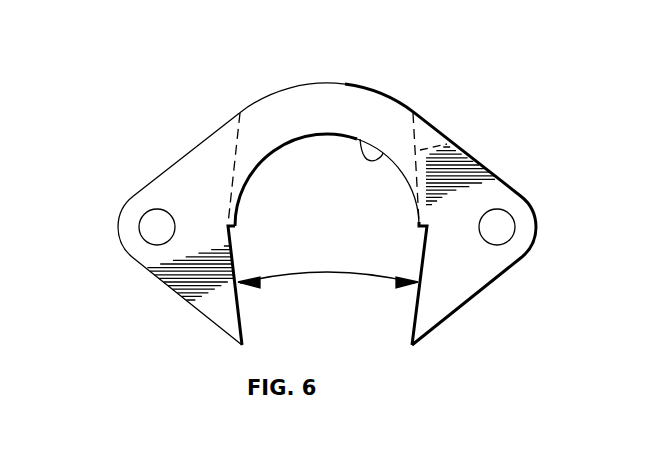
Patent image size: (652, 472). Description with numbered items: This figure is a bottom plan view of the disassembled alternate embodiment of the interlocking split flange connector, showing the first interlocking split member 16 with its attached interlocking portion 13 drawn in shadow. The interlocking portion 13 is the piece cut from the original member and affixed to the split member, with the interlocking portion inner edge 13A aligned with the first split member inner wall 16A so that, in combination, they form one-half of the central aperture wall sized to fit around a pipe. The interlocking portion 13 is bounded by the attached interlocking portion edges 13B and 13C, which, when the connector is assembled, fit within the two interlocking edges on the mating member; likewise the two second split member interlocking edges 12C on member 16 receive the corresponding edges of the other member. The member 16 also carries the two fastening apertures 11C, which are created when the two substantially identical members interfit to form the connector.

The interlocking portion 13 is at (307, 108).
The interlocking portion inner edge 13A is at (270, 157).
The interlocking portion edge 13B is at (237, 145).
The interlocking portion edge 13C is at (460, 132).
The first split member inner wall 16A is at (375, 158).
The first interlocking split flange member 16 is at (215, 235).
The fastening aperture 11C is at (150, 208).
The second split member interlocking edge 12C is at (314, 276).